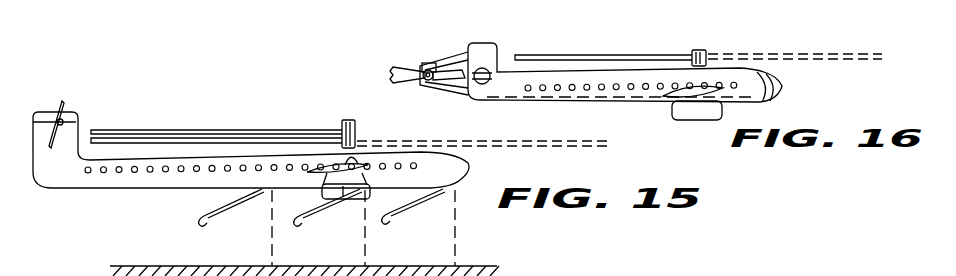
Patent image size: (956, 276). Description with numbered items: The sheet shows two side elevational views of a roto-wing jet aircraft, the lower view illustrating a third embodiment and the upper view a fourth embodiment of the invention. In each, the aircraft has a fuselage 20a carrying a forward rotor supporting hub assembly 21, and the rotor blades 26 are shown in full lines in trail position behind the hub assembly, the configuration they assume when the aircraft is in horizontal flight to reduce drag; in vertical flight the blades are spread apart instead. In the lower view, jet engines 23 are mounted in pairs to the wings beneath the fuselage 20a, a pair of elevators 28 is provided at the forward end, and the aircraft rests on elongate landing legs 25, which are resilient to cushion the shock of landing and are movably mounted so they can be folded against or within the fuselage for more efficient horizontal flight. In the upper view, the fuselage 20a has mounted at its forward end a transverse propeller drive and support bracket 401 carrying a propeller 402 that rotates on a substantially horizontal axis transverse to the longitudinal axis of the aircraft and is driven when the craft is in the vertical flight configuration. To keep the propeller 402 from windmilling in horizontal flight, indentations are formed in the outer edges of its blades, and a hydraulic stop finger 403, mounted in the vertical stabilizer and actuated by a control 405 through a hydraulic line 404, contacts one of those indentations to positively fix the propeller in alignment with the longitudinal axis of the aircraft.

In FIG. 15, the fuselage 20a is at (134, 189).
In FIG. 16, the fuselage 20a is at (628, 67).
In FIG. 15, the forward rotor supporting hub assembly 21 is at (353, 118).
In FIG. 16, the forward rotor supporting hub assembly 21 is at (705, 50).
In FIG. 15, the jet engines 23 is at (353, 205).
In FIG. 15, the landing legs 25 is at (408, 208).
In FIG. 15, the rotor blades 26 is at (173, 129).
In FIG. 16, the rotor blades 26 is at (552, 55).
In FIG. 15, the elevators 28 is at (65, 121).
In FIG. 16, the transverse propeller drive and support bracket 401 is at (429, 62).
In FIG. 16, the propeller 402 is at (392, 68).
In FIG. 16, the hydraulic stop finger 403 is at (483, 65).
In FIG. 16, the hydraulic line 404 is at (628, 103).
In FIG. 16, the control 405 is at (787, 89).